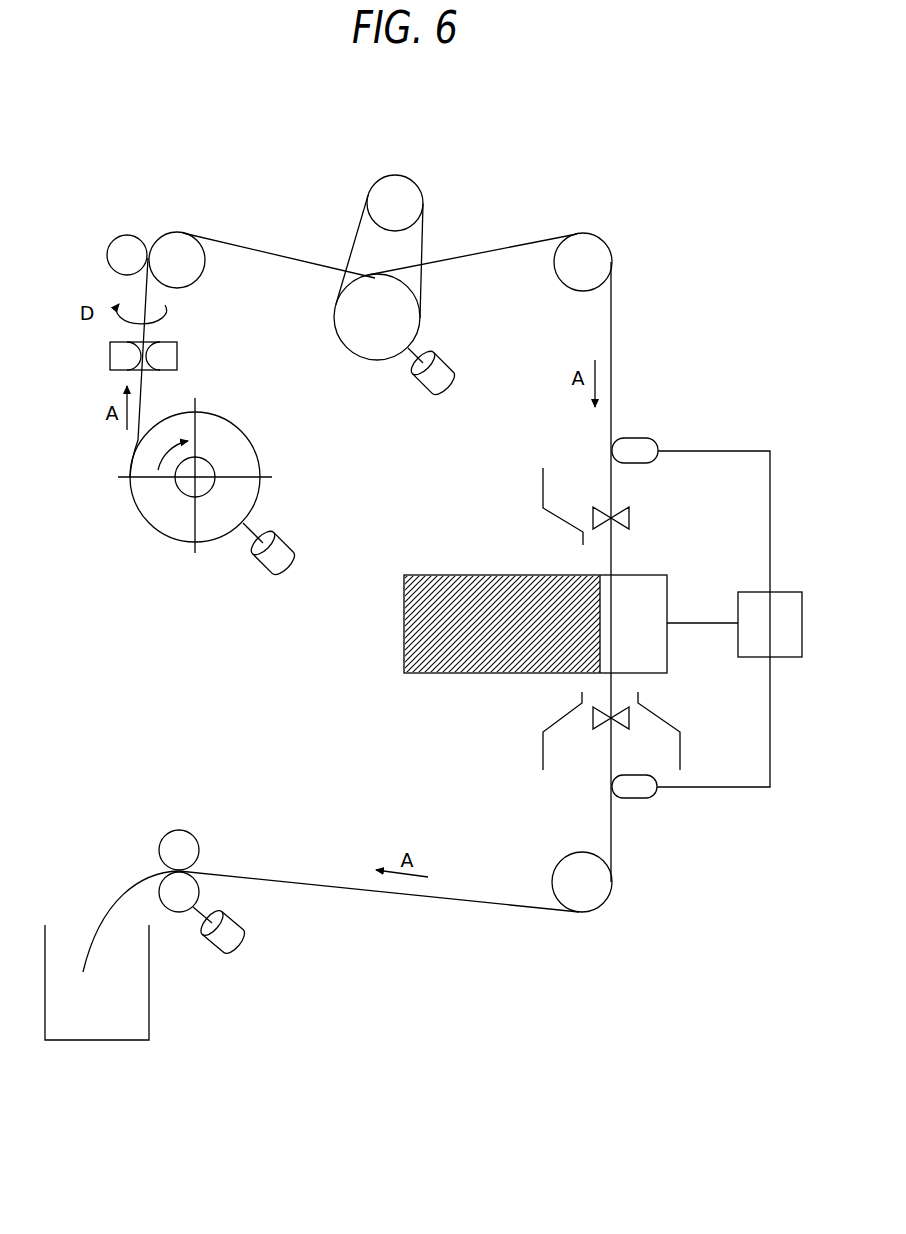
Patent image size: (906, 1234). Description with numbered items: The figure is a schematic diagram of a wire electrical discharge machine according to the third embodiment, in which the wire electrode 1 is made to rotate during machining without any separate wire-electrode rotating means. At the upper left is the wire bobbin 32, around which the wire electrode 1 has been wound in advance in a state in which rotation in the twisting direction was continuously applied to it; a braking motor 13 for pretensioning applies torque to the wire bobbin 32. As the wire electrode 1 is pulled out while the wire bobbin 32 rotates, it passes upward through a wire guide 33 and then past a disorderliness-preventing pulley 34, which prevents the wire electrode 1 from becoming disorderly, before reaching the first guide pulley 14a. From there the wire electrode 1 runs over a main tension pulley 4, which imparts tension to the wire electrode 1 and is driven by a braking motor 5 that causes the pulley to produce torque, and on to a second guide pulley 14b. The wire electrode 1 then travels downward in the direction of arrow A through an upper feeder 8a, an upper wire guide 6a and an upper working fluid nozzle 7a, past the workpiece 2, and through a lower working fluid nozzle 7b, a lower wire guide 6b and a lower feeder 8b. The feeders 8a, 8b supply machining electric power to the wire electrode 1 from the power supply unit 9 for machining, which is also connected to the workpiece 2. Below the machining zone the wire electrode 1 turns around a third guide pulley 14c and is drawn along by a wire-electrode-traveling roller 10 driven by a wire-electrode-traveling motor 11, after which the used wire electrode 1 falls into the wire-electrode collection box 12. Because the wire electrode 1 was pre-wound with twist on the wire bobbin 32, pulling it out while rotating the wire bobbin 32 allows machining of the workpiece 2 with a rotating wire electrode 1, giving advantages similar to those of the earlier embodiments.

The wire electrode 1 is at (611, 353).
The workpiece 2 is at (404, 625).
The main tension pulley 4 is at (412, 320).
The braking motor 5 is at (430, 392).
The wire guide 6a is at (593, 518).
The wire guide 6b is at (593, 718).
The working fluid nozzle 7a is at (543, 485).
The working fluid nozzle 7b is at (543, 757).
The feeder 8a is at (633, 447).
The feeder 8b is at (632, 793).
The power supply unit 9 is at (785, 598).
The wire-electrode-traveling roller 10 is at (180, 838).
The wire-electrode-traveling motor 11 is at (235, 935).
The wire-electrode collection box 12 is at (149, 1018).
The braking motor for pretensioning 13 is at (270, 576).
The guide pulley 14a is at (172, 243).
The guide pulley 14b is at (595, 246).
The guide pulley 14c is at (602, 885).
The wire bobbin 32 is at (233, 432).
The wire guide 33 is at (178, 356).
The disorderliness-preventing pulley 34 is at (120, 243).